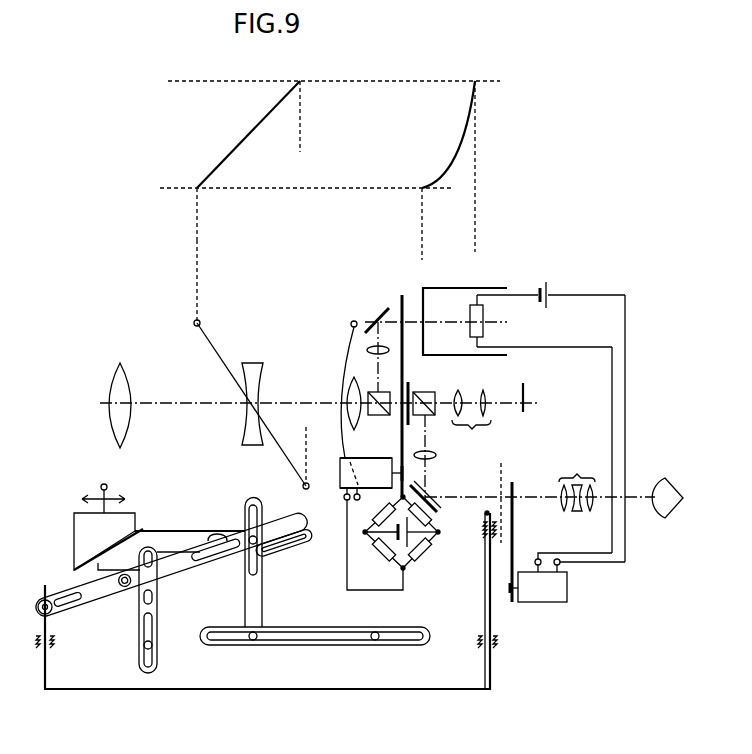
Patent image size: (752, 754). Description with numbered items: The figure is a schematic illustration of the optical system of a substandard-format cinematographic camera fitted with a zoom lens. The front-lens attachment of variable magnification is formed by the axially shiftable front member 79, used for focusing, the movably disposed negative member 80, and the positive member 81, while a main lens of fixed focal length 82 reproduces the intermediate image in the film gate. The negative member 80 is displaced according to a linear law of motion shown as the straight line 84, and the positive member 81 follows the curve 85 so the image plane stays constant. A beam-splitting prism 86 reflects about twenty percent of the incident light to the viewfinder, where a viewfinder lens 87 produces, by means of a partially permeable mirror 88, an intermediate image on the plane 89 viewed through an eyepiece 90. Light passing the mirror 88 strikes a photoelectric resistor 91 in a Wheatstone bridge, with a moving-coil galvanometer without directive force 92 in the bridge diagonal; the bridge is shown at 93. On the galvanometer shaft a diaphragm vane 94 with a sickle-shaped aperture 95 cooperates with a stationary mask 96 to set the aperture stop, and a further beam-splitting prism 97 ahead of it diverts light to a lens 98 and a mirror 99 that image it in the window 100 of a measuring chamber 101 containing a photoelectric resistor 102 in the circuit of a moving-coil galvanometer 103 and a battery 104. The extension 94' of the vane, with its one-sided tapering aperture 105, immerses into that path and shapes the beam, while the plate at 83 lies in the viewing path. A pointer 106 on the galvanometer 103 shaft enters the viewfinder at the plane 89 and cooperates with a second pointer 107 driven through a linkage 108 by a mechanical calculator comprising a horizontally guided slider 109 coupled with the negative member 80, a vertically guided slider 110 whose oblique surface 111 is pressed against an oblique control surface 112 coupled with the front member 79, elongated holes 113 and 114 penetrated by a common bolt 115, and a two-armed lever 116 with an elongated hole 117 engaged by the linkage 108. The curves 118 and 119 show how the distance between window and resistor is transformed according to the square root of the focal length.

The front member 79 is at (130, 380).
The negative member 80 is at (262, 378).
The positive member 81 is at (348, 387).
The main lens of fixed focal length 82 is at (471, 419).
The reticle plate 83 is at (526, 392).
The straight line 84 is at (212, 333).
The curve 85 is at (350, 325).
The beam-splitting prism 86 is at (434, 394).
The viewfinder lens 87 is at (432, 470).
The mirror 88 is at (437, 512).
The plane 89 is at (503, 468).
The eyepiece 90 is at (577, 482).
The photoelectric resistor 91 is at (420, 521).
The moving-coil galvanometer without directive force 92 is at (371, 479).
The bridge circuit 93 is at (391, 544).
The diaphragm vane 94 is at (437, 457).
The extension 94' is at (397, 380).
The sickle-shaped aperture 95 is at (400, 413).
The stationary mask 96 is at (409, 392).
The further beam-splitting prism 97 is at (345, 413).
The lens 98 is at (368, 350).
The mirror 99 is at (366, 318).
The window 100 is at (425, 315).
The measuring chamber 101 is at (478, 288).
The photoelectric resistor 102 is at (484, 321).
The moving-coil galvanometer 103 is at (571, 577).
The battery 104 is at (547, 296).
The one-sided tapering aperture 105 is at (386, 306).
The pointer 106 is at (514, 536).
The second pointer 107 is at (486, 511).
The linkage 108 is at (416, 692).
The slider 109 is at (326, 646).
The slider 110 is at (172, 538).
The oblique surface 111 is at (140, 530).
The oblique control surface 112 is at (74, 525).
The elongated hole 113 is at (258, 578).
The elongated hole 114 is at (216, 534).
The common bolt 115 is at (260, 546).
The two-armed lever 116 is at (180, 574).
The elongated hole 117 is at (298, 522).
The curve 118 is at (236, 148).
The curve 119 is at (448, 150).